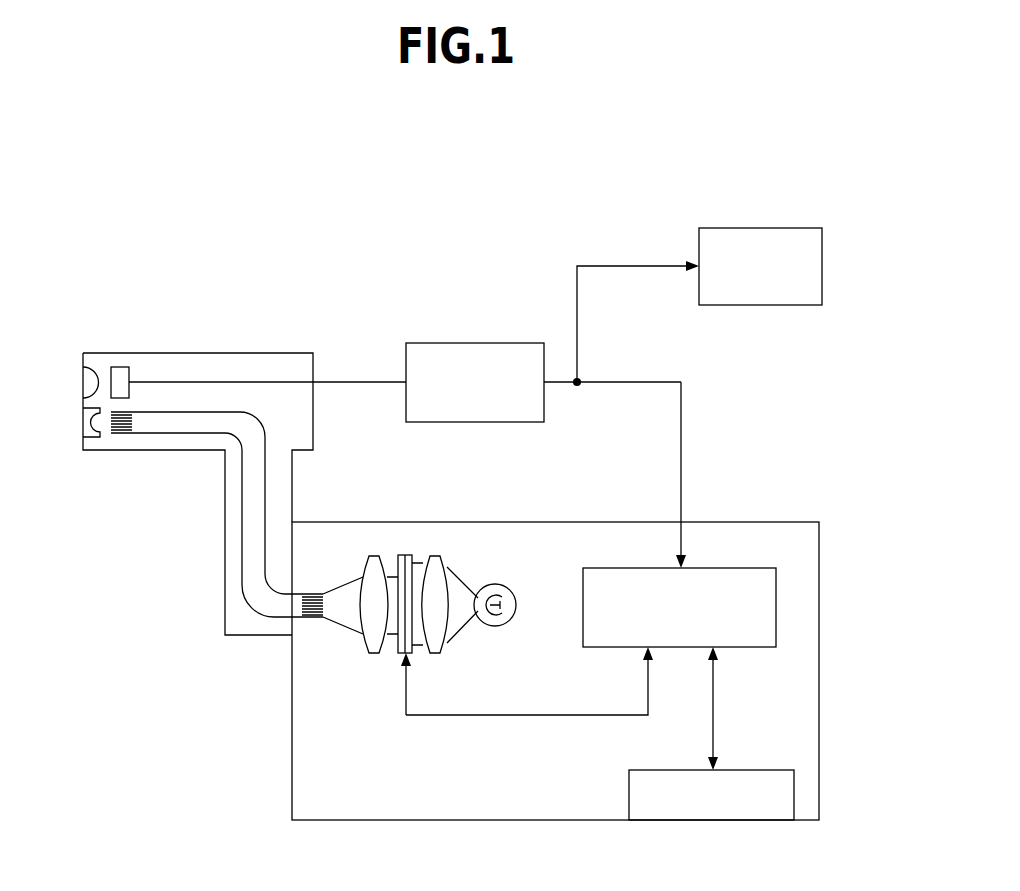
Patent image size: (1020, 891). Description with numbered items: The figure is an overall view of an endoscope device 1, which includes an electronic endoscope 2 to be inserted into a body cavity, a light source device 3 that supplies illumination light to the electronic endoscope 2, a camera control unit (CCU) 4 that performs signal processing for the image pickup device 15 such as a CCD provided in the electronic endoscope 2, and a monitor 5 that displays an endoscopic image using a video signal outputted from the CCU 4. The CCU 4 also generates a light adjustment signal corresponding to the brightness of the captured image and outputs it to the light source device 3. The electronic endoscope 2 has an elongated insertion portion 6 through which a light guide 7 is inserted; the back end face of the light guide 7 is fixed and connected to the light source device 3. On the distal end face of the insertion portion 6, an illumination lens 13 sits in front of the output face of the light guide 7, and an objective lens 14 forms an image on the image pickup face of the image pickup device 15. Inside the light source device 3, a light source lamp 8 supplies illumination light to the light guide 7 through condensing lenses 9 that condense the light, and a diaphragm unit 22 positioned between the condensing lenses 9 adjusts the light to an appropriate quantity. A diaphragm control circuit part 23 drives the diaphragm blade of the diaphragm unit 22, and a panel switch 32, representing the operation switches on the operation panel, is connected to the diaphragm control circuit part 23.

The endoscope device 1 is at (243, 794).
The electronic endoscope 2 is at (247, 328).
The light source device 3 is at (828, 652).
The camera control unit (CCU) 4 is at (473, 343).
The monitor 5 is at (763, 305).
The insertion portion 6 is at (185, 353).
The light guide 7 is at (253, 545).
The light source lamp 8 is at (506, 588).
The condensing lenses 9 is at (376, 555).
The illumination lens 13 is at (88, 448).
The objective lens 14 is at (90, 367).
The image pickup device 15 is at (117, 366).
The diaphragm unit 22 is at (393, 652).
The diaphragm control circuit part 23 is at (583, 640).
The panel switch 32 is at (761, 770).